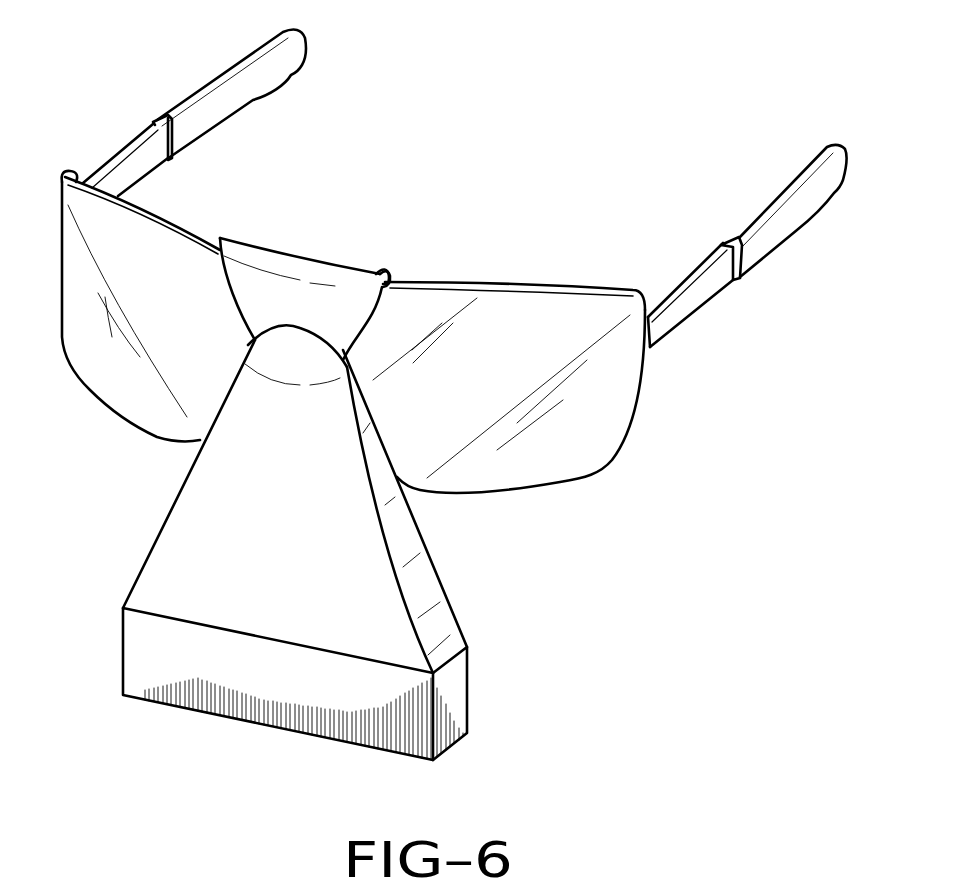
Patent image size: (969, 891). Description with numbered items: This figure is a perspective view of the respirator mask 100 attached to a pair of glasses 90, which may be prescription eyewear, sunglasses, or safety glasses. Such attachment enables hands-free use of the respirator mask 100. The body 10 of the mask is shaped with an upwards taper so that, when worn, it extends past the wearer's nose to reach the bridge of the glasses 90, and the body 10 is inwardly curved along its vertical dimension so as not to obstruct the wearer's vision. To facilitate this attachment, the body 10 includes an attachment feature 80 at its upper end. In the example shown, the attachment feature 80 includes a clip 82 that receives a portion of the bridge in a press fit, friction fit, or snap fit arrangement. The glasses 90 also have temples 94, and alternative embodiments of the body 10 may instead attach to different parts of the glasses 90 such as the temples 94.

The body 10 is at (170, 552).
The attachment feature 80 is at (318, 277).
The clip 82 is at (383, 277).
The pair of glasses 90 is at (523, 492).
The temples 94 is at (683, 307).
The respirator mask 100 is at (186, 748).